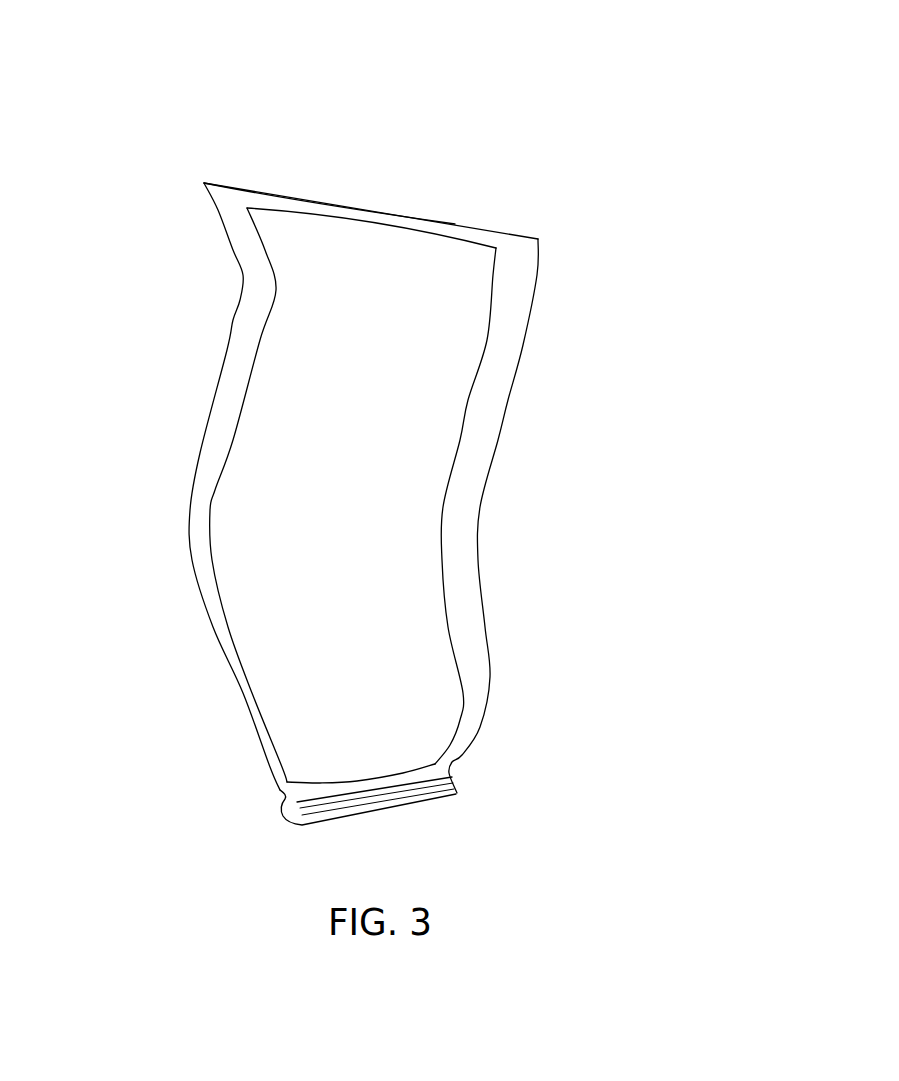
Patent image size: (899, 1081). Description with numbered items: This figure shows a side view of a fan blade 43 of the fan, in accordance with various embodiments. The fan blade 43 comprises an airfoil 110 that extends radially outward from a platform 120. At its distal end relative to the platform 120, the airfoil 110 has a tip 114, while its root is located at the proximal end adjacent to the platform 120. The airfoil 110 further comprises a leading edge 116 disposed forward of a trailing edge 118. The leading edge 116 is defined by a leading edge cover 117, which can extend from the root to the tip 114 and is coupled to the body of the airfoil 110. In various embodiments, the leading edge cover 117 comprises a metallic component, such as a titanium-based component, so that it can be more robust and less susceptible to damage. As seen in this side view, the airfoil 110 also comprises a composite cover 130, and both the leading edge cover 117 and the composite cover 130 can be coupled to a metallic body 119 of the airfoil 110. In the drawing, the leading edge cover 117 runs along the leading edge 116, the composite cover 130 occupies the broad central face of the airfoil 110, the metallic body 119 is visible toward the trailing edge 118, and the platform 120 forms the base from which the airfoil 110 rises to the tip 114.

The fan blade 43 is at (109, 76).
The airfoil 110 is at (485, 383).
The tip 114 is at (347, 204).
The leading edge 116 is at (200, 461).
The leading edge cover 117 is at (247, 335).
The trailing edge 118 is at (483, 490).
The metallic body 119 is at (503, 341).
The platform 120 is at (449, 268).
The composite cover 130 is at (361, 634).